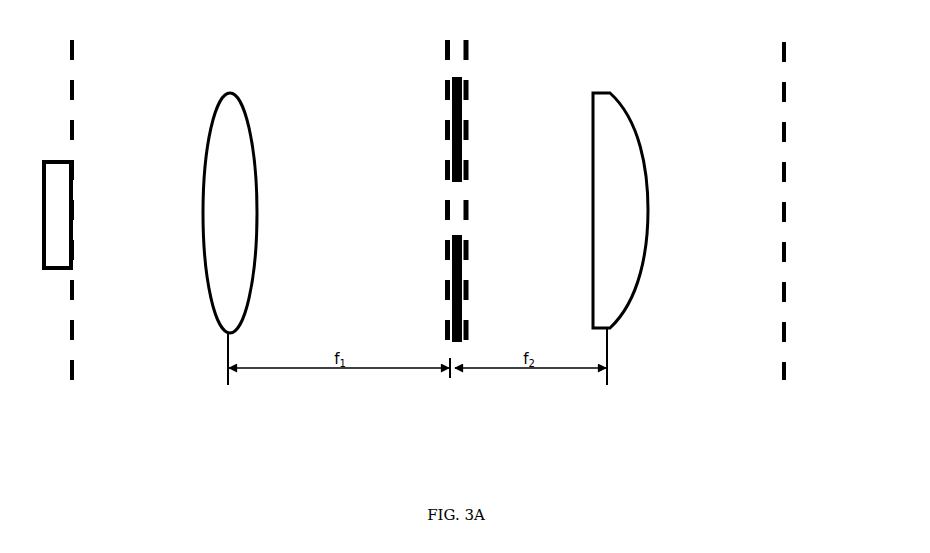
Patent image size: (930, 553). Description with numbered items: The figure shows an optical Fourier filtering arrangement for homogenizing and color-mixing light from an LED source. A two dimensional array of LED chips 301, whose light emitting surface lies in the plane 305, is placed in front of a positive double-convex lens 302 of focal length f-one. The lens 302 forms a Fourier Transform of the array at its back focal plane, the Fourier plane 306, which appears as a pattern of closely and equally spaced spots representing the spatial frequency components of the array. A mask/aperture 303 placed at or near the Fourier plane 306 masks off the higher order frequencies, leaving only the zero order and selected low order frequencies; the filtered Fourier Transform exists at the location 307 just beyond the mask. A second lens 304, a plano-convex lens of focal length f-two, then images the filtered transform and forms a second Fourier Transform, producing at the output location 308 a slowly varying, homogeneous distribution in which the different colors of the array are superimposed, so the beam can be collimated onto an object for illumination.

The two dimensional array of LED chips 301 is at (49, 202).
The positive double-convex lens 302 is at (230, 201).
The mask/aperture 303 is at (450, 112).
The second lens 304 is at (620, 198).
The plane of the light emitting surface 305 is at (75, 199).
The Fourier plane 306 is at (461, 171).
The location of filtered Fourier Transform 307 is at (471, 60).
The optical output location 308 is at (784, 199).